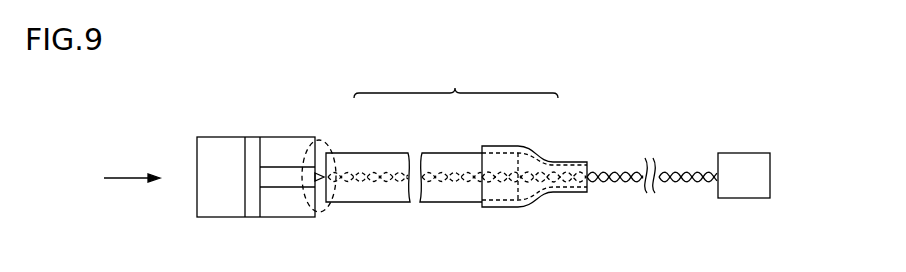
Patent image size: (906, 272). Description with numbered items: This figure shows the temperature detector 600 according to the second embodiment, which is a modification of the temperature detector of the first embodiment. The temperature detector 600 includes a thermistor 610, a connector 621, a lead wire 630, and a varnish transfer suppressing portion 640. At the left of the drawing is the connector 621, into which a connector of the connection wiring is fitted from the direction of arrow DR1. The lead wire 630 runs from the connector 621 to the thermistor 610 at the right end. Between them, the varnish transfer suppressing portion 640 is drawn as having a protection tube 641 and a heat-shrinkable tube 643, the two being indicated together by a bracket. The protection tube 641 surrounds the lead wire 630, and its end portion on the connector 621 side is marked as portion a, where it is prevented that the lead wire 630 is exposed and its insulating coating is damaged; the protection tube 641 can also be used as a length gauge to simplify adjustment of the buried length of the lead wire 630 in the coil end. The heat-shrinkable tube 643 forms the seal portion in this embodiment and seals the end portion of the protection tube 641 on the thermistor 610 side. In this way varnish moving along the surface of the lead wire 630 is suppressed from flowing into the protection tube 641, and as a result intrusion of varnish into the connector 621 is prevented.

The temperature detector 600 is at (685, 129).
The thermistor 610 is at (745, 190).
The connector 621 is at (222, 155).
The lead wire 630 is at (600, 170).
The varnish transfer suppressing portion 640 is at (456, 81).
The protection tube 641 is at (372, 163).
The heat-shrinkable tube 643 is at (535, 150).
The portion a is at (335, 157).
The arrow DR1 is at (122, 178).